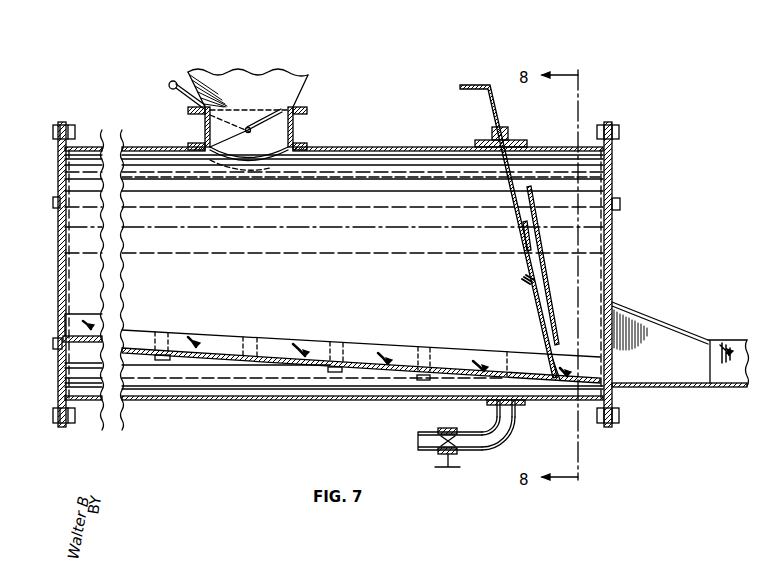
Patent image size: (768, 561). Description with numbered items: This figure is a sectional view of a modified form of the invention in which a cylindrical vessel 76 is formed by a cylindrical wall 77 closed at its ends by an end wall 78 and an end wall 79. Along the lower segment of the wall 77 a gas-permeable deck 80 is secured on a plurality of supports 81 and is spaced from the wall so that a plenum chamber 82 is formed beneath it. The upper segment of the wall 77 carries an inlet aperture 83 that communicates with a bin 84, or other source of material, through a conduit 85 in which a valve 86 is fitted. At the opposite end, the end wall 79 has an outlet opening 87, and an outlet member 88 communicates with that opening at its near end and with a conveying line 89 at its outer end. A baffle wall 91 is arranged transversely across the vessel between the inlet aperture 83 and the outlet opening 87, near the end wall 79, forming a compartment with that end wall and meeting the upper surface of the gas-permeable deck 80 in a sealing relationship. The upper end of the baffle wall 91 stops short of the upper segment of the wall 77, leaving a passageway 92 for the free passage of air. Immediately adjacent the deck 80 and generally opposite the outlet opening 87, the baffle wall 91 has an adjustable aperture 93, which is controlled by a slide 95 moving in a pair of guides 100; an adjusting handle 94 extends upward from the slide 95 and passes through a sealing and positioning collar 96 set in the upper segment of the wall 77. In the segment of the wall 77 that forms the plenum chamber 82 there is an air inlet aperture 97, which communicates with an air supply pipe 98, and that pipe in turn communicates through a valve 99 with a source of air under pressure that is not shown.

The cylindrical vessel 76 is at (83, 185).
The cylindrical wall 77 is at (147, 147).
The end wall 78 is at (62, 122).
The end wall 79 is at (613, 147).
The gas-permeable deck 80 is at (285, 366).
The supports 81 is at (337, 373).
The plenum chamber 82 is at (353, 384).
The inlet aperture 83 is at (283, 152).
The bin 84 is at (308, 77).
The conduit 85 is at (296, 120).
The valve 86 is at (268, 100).
The outlet opening 87 is at (611, 353).
The outlet member 88 is at (671, 331).
The conveying line 89 is at (728, 340).
The baffle wall 91 is at (533, 202).
The passageway 92 is at (527, 177).
The adjustable aperture 93 is at (565, 355).
The adjusting handle 94 is at (470, 85).
The slide 95 is at (552, 312).
The sealing and positioning collar 96 is at (478, 143).
The air inlet aperture 97 is at (509, 421).
The air supply pipe 98 is at (477, 452).
The valve 99 is at (449, 468).
The guides 100 is at (540, 242).